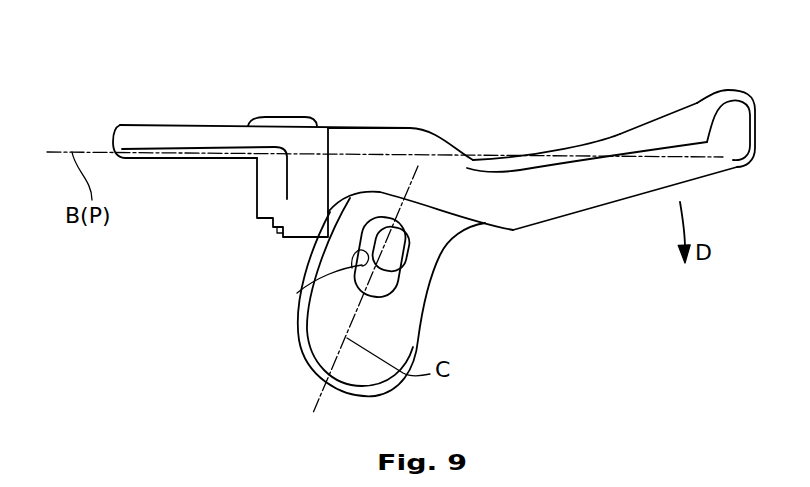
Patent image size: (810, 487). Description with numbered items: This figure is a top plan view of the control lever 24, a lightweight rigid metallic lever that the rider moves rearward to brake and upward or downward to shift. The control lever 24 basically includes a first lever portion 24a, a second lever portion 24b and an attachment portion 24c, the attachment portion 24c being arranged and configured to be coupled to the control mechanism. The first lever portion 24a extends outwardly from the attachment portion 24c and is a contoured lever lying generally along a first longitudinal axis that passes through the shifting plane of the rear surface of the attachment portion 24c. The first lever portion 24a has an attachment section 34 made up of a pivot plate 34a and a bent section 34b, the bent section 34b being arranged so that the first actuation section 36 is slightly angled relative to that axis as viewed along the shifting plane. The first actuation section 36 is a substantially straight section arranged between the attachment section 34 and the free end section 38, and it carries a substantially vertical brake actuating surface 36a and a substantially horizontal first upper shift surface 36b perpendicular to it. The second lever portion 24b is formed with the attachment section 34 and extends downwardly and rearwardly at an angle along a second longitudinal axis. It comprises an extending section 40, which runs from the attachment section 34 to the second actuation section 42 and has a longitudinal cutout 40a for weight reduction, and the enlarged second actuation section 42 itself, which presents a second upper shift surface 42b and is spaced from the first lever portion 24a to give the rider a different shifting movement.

The control lever 24 is at (510, 82).
The first lever portion 24a is at (633, 127).
The second lever portion 24b is at (425, 315).
The attachment portion 24c is at (148, 125).
The attachment section 34 is at (467, 88).
The pivot plate 34a is at (348, 128).
The bent section 34b is at (468, 158).
The first actuation section 36 is at (580, 142).
The brake actuating surface 36a is at (538, 160).
The first upper shift surface 36b is at (585, 194).
The free end section 38 is at (735, 85).
The extending section 40 is at (305, 262).
The longitudinal cutout 40a is at (317, 278).
The second actuation section 42 is at (303, 360).
The second upper shift surface 42b is at (403, 336).